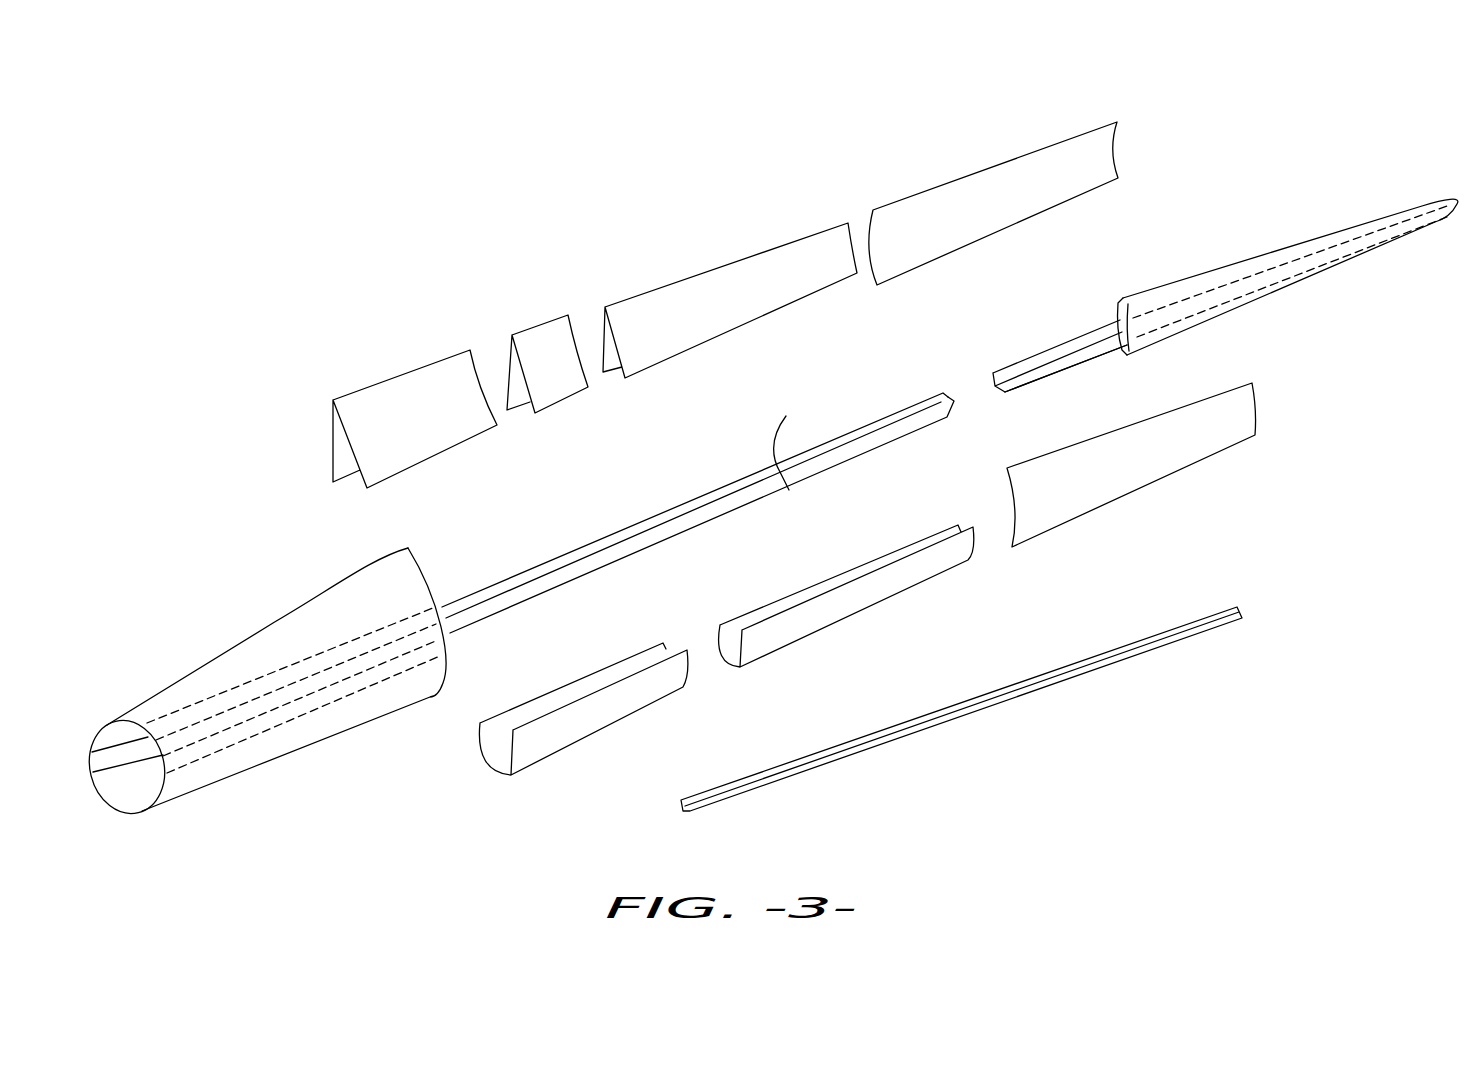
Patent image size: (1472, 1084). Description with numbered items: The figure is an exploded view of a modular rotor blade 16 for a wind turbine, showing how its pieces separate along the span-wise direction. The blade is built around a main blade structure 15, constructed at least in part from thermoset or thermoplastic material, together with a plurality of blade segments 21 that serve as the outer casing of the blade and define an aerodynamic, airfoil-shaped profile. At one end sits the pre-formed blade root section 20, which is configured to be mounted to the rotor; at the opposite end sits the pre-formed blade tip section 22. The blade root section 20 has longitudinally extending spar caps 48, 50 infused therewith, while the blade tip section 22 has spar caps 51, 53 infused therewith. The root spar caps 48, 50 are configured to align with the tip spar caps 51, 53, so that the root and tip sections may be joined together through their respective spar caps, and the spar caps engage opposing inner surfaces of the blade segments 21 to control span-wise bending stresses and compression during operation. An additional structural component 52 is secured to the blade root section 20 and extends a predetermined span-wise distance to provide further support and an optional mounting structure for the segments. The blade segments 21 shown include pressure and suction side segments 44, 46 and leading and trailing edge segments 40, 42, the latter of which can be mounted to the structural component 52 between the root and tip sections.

The main blade structure 15 is at (253, 615).
The rotor blade 16 is at (1185, 142).
The blade root section 20 is at (253, 765).
The blade segment 21 is at (363, 380).
The blade tip section 22 is at (1300, 282).
The leading edge segment 40 is at (597, 732).
The trailing edge segment 42 is at (410, 367).
The pressure side segment 44 is at (990, 167).
The suction side segment 46 is at (1140, 490).
The spar cap 48 is at (492, 590).
The spar cap 50 is at (680, 527).
The spar cap 51 is at (993, 367).
The structural component 52 is at (1068, 677).
The spar cap 53 is at (1052, 372).